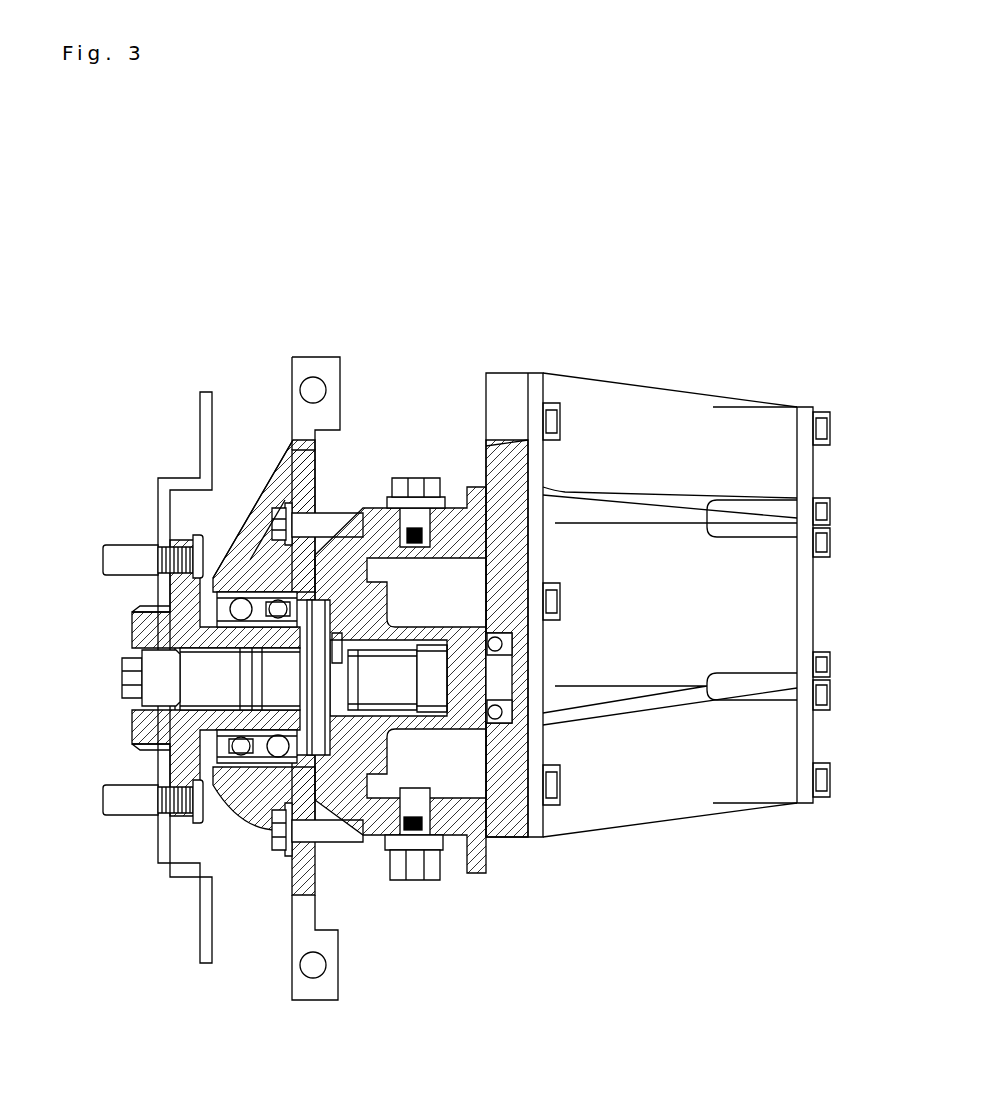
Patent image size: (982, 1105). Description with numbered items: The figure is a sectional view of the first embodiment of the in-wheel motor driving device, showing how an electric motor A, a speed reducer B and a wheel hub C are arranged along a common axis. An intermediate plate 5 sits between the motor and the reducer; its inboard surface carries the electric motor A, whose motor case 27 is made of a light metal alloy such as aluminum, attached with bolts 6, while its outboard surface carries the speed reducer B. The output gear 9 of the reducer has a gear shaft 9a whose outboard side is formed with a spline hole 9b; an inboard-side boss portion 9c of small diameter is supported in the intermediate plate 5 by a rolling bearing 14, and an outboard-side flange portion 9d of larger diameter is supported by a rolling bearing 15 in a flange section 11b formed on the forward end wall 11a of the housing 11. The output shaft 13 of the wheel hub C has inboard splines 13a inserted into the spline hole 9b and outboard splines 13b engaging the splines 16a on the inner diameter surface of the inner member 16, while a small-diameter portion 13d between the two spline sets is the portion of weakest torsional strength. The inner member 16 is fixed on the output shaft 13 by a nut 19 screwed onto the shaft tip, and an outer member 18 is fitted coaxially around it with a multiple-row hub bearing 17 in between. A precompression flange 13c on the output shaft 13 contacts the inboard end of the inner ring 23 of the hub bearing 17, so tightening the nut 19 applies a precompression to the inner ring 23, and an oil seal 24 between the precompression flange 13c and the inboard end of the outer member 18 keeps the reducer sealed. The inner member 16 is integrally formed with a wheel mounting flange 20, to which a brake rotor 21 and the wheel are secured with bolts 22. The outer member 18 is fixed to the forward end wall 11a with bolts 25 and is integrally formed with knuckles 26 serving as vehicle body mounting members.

The intermediate plate 5 is at (505, 415).
The bolts 6 is at (553, 790).
The output gear 9 is at (443, 740).
The gear shaft 9a is at (463, 683).
The spline hole 9b is at (398, 690).
The boss portion 9c is at (495, 668).
The flange portion 9d is at (280, 560).
The housing 11 is at (340, 502).
The forward end wall 11a is at (358, 513).
The flange section 11b is at (410, 480).
The output shaft 13 is at (142, 730).
The splines 13a is at (360, 690).
The splines 13b is at (177, 705).
The precompression flange 13c is at (307, 832).
The small-diameter portion 13d is at (318, 700).
The rolling bearing 14 is at (510, 727).
The rolling bearing 15 is at (287, 570).
The inner member 16 is at (170, 638).
The splines 16a is at (122, 663).
The hub bearing 17 is at (251, 770).
The outer member 18 is at (235, 768).
The nut 19 is at (208, 695).
The wheel mounting flange 20 is at (168, 832).
The brake rotor 21 is at (205, 440).
The bolts 22 is at (140, 556).
The inner ring 23 is at (240, 650).
The oil seal 24 is at (287, 562).
The bolts 25 is at (307, 832).
The knuckles 26 is at (323, 987).
The motor case 27 is at (700, 470).
The electric motor A is at (661, 381).
The speed reducer B is at (361, 380).
The wheel hub C is at (113, 603).